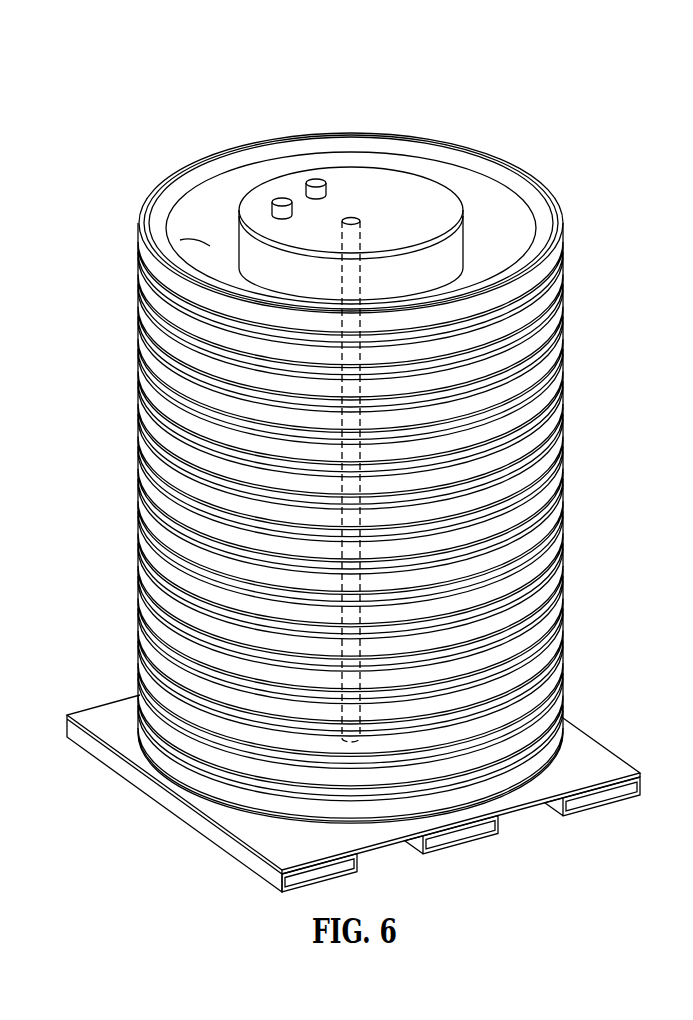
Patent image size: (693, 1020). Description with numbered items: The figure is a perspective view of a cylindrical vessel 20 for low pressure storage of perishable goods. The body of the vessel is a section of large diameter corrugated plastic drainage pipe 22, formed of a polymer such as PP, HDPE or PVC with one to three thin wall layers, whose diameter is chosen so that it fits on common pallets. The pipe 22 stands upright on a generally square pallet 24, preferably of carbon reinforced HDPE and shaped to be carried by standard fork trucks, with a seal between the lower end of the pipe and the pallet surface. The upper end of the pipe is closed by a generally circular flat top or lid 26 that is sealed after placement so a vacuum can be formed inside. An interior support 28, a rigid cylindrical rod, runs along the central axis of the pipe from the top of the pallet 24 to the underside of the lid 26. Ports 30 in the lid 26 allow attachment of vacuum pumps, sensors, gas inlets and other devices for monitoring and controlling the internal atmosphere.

The cylindrical vessel 20 is at (207, 112).
The corrugated plastic drainage pipe 22 is at (148, 412).
The pallet 24 is at (577, 745).
The top or lid 26 is at (220, 205).
The interior support 28 is at (357, 238).
The ports 30 is at (272, 210).